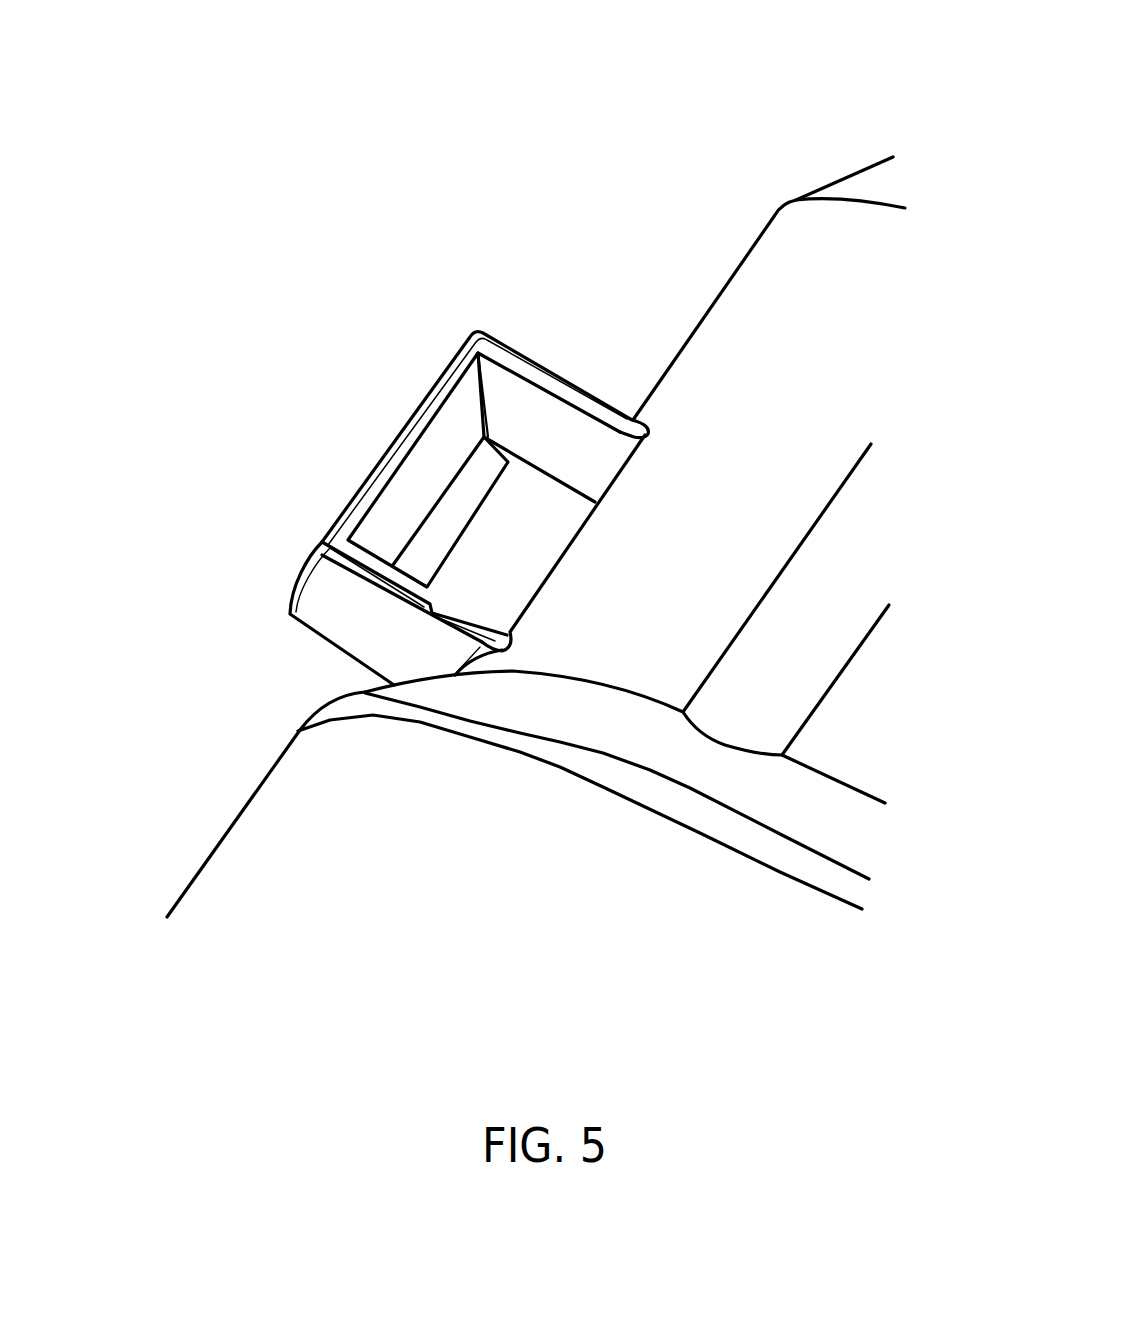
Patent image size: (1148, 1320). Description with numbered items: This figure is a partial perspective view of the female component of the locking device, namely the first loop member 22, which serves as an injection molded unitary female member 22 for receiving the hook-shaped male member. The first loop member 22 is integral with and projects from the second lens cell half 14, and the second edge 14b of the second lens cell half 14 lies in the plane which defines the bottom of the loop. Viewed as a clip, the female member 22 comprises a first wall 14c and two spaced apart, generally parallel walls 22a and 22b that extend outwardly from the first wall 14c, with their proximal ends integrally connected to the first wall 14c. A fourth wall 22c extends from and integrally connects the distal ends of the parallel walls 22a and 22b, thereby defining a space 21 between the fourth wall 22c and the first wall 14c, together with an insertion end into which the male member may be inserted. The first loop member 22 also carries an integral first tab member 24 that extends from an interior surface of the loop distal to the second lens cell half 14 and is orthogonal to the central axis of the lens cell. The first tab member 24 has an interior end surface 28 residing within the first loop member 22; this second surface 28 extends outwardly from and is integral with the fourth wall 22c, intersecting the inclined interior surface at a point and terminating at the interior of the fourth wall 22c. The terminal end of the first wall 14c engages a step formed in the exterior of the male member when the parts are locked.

The second lens cell half 14 is at (532, 62).
The second edge 14b is at (757, 238).
The first wall 14c is at (566, 639).
The space 21 is at (487, 565).
The first loop member 22 is at (280, 682).
The parallel wall 22a is at (548, 437).
The parallel wall 22b is at (360, 637).
The fourth wall 22c is at (393, 457).
The first tab member 24 is at (489, 440).
The interior end surface 28 is at (437, 518).